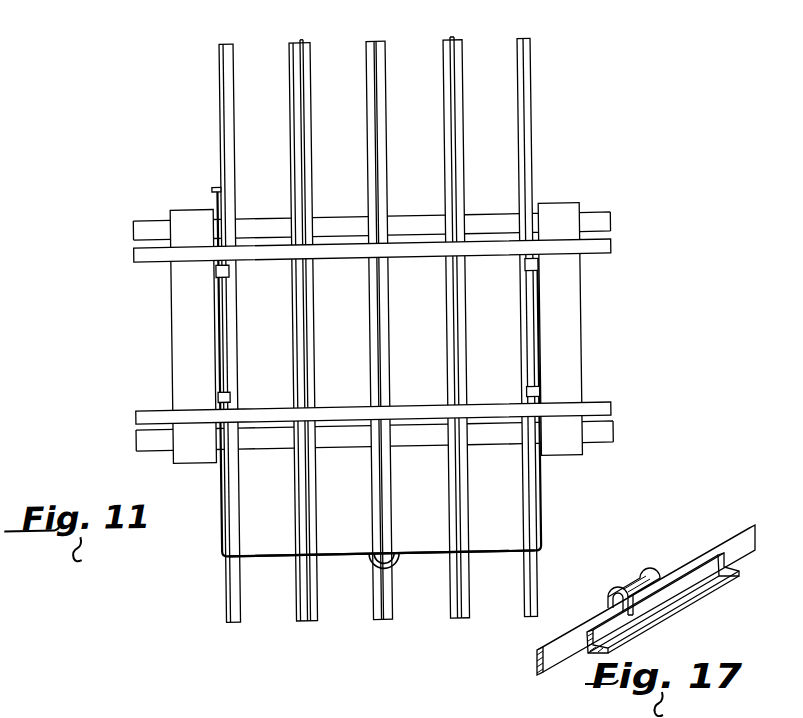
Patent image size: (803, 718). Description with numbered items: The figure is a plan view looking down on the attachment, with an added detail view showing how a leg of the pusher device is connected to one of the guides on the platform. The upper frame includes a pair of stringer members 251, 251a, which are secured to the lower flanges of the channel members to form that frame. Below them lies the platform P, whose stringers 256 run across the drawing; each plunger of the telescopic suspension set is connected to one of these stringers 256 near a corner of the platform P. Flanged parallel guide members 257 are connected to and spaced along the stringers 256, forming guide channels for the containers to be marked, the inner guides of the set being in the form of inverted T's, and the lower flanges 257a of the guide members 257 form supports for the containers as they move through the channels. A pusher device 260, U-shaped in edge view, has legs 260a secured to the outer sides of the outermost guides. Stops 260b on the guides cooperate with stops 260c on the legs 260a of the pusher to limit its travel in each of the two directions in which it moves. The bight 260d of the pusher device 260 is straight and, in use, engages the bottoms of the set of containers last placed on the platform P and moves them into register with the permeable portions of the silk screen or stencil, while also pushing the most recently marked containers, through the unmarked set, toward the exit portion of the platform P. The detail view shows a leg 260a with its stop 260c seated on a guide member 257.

In FIG. 11, the stringer member 251 is at (577, 328).
In FIG. 11, the stringer member 251a is at (166, 334).
In FIG. 11, the stringer of the platform 256 is at (608, 229).
In FIG. 11, the guide member 257 is at (450, 46).
In FIG. 17, the guide member 257 is at (689, 596).
In FIG. 11, the lower flange of guide member 257a is at (463, 66).
In FIG. 11, the pusher device 260 is at (539, 526).
In FIG. 11, the leg of pusher device 260a is at (211, 539).
In FIG. 17, the leg of pusher device 260a is at (556, 643).
In FIG. 11, the stop on guide 260b is at (210, 190).
In FIG. 11, the stop on pusher leg 260c is at (227, 278).
In FIG. 17, the stop on pusher leg 260c is at (650, 577).
In FIG. 11, the bight of pusher member 260d is at (375, 573).
In FIG. 11, the platform P is at (207, 482).